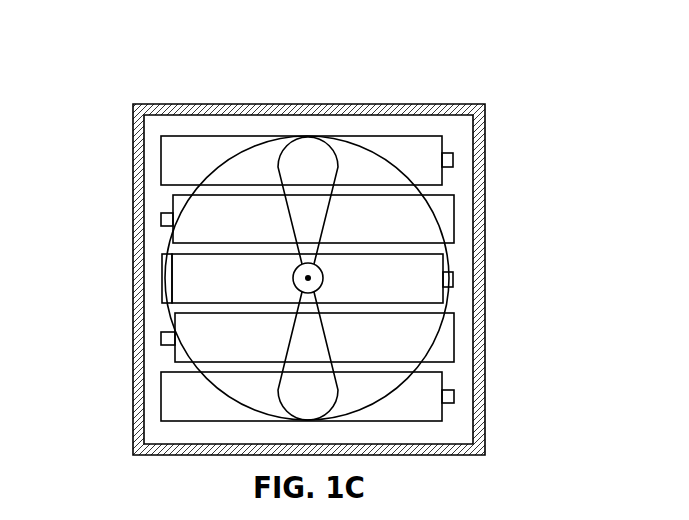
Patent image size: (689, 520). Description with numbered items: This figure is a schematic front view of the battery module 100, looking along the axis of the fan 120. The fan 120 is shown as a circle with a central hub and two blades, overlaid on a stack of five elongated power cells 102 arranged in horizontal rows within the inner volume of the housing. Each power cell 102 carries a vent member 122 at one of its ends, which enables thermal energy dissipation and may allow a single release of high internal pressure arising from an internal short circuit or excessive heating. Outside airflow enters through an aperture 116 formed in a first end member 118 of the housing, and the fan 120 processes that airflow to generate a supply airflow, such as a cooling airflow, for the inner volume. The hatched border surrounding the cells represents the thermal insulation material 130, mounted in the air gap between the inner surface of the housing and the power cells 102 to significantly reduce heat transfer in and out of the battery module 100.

The battery module 100 is at (140, 60).
The power cell 102 is at (425, 150).
The aperture 116 is at (173, 313).
The first end member 118 is at (157, 197).
The fan 120 is at (322, 238).
The vent member 122 is at (456, 160).
The thermal insulation material 130 is at (278, 110).